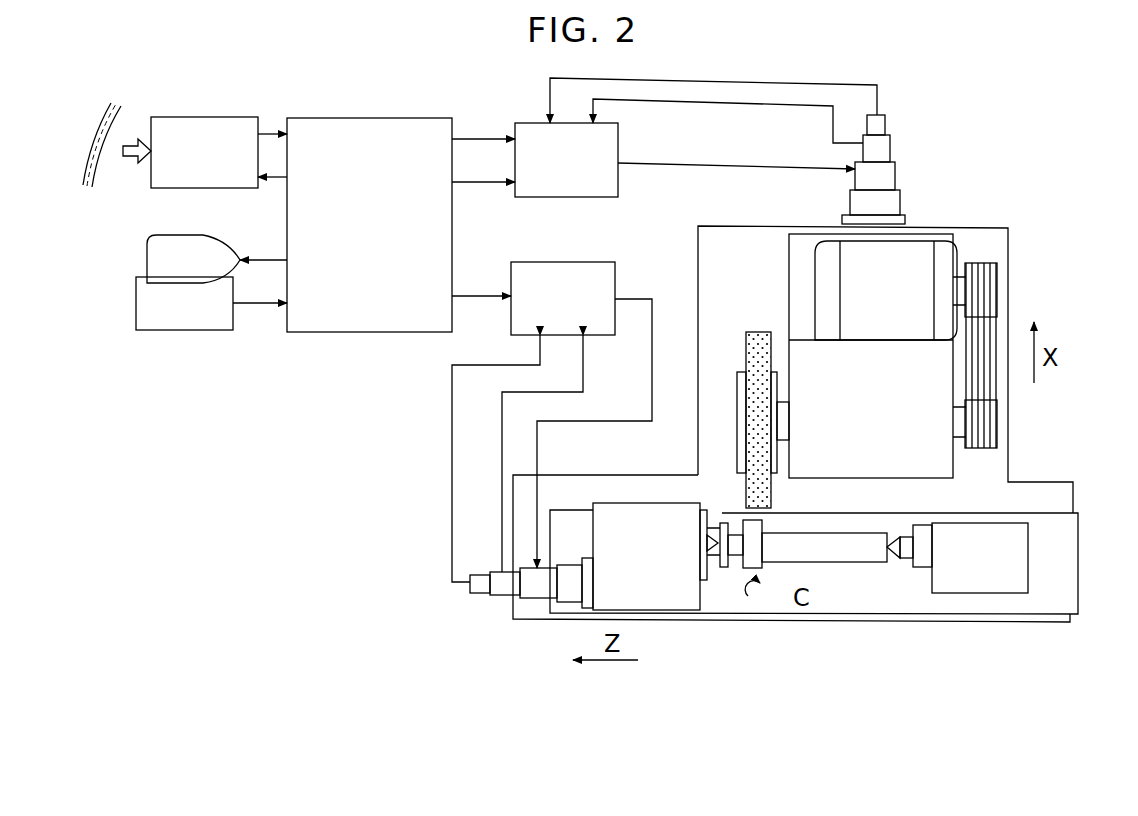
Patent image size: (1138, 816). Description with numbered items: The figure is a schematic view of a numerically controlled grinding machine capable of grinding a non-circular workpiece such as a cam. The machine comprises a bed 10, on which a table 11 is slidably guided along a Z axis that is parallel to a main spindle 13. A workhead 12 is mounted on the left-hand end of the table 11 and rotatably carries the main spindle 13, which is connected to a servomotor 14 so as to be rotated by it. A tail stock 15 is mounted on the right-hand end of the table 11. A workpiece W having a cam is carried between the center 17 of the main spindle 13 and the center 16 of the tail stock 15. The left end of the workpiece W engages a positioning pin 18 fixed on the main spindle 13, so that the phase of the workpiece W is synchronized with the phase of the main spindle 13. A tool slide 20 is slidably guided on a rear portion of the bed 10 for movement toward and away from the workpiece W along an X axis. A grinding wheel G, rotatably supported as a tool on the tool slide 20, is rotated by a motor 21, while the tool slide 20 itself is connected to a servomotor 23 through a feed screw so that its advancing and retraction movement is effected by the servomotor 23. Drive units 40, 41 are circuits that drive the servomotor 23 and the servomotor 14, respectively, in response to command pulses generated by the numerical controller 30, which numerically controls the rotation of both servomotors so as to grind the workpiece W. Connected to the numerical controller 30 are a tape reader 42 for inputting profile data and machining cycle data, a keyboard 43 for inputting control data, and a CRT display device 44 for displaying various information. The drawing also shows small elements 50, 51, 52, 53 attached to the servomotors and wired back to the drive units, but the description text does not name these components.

The bed 10 is at (1065, 510).
The table 11 is at (1075, 596).
The workhead 12 is at (680, 612).
The main spindle 13 is at (710, 553).
The servomotor 14 is at (538, 600).
The tail stock 15 is at (987, 594).
The center of the tail stock 16 is at (907, 562).
The center of the main spindle 17 is at (755, 562).
The positioning pin 18 is at (715, 520).
The tool slide 20 is at (952, 468).
The motor 21 is at (925, 252).
The servomotor 23 is at (895, 188).
The numerical controller 30 is at (289, 118).
The drive unit 40 is at (515, 123).
The drive unit 41 is at (512, 262).
The tape reader 42 is at (152, 117).
The keyboard 43 is at (141, 330).
The CRT display device 44 is at (147, 254).
The encoder 50 is at (470, 594).
The encoder 51 is at (500, 597).
The encoder 52 is at (886, 120).
The encoder 53 is at (890, 149).
The grinding wheel G is at (750, 353).
The workpiece W is at (815, 574).